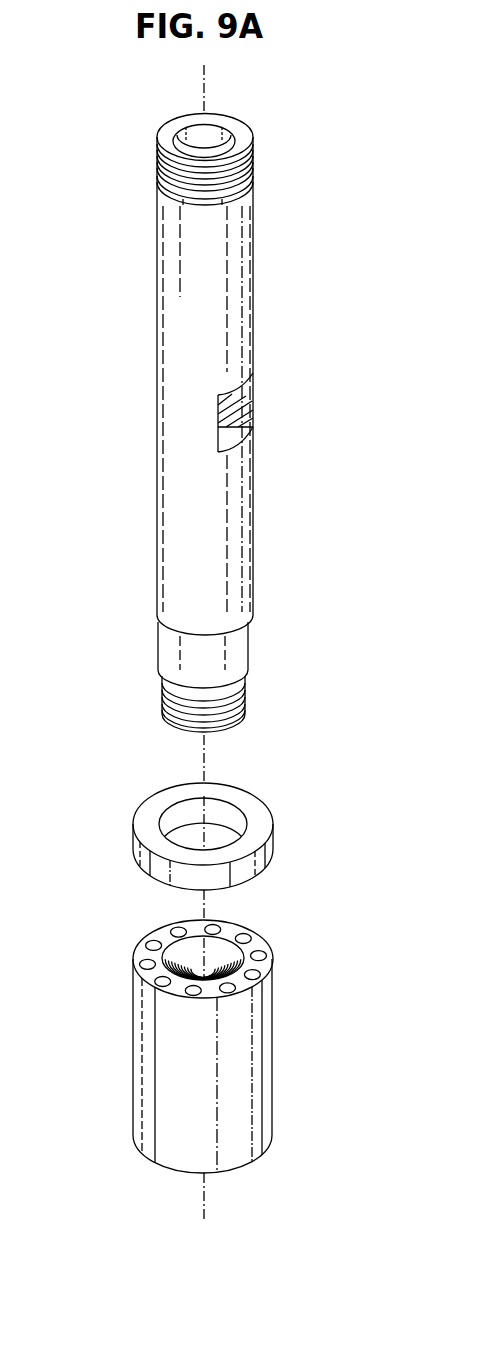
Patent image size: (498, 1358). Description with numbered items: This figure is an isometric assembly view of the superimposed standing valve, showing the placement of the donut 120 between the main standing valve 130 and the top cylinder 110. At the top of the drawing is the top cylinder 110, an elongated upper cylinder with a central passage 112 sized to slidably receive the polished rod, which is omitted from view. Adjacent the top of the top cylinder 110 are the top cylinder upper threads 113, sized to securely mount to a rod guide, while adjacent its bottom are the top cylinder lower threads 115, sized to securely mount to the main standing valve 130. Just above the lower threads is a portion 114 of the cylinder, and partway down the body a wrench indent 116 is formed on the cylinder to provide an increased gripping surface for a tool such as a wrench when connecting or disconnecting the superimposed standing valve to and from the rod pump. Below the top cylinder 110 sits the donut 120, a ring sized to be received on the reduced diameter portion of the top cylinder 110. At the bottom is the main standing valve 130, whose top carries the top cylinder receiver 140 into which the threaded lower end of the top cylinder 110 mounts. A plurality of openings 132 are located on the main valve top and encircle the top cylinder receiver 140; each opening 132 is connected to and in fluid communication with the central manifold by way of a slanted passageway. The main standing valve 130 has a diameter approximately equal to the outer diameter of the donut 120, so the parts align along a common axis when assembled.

The top cylinder 110 is at (253, 308).
The central passage 112 is at (232, 117).
The top cylinder upper threads 113 is at (253, 157).
The neck shoulder section 114 is at (248, 635).
The top cylinder lower threads 115 is at (245, 687).
The wrench indent 116 is at (253, 400).
The donut 120 is at (273, 838).
The main standing valve 130 is at (272, 1028).
The openings 132 is at (213, 926).
The top cylinder receiver 140 is at (227, 962).